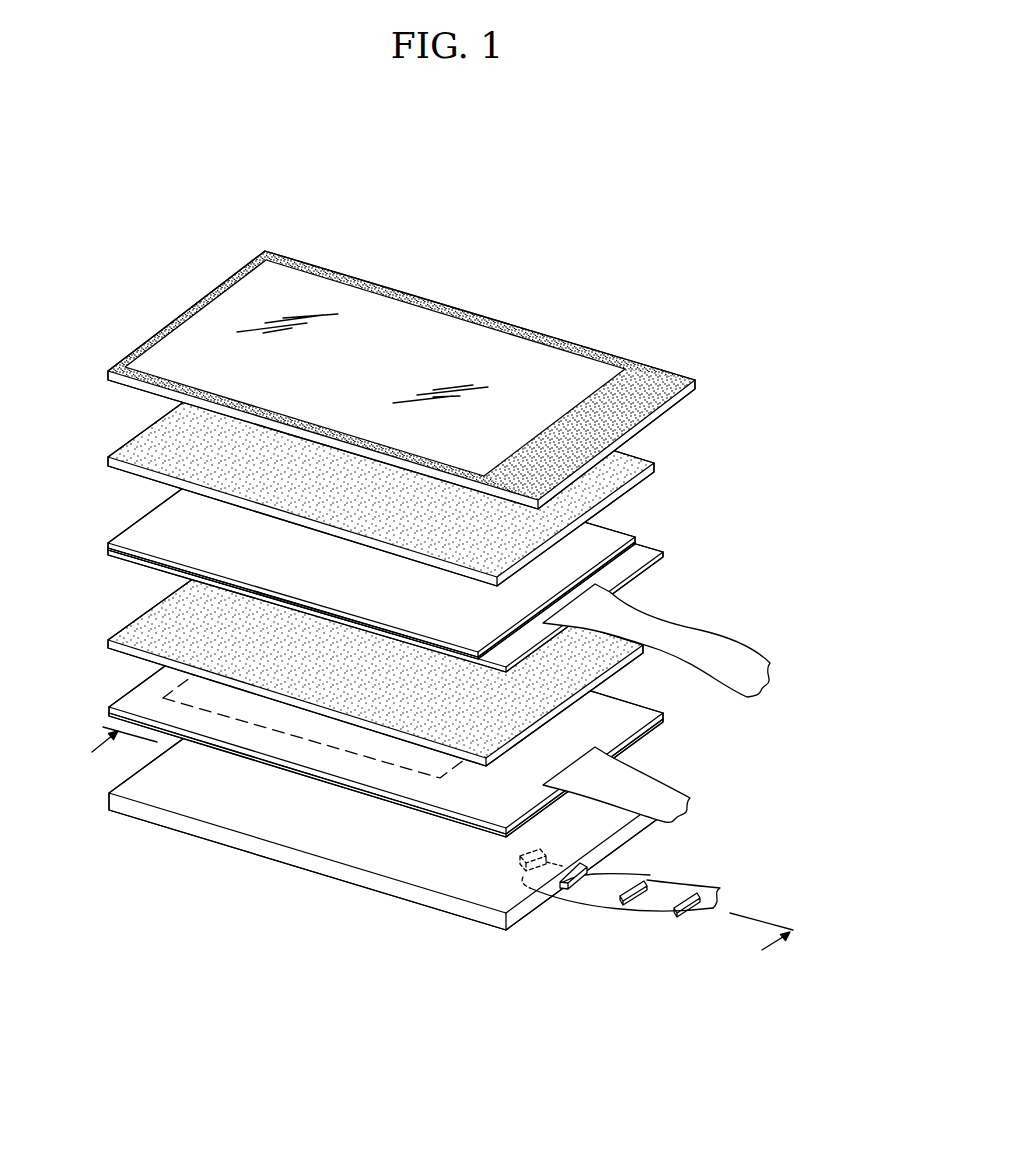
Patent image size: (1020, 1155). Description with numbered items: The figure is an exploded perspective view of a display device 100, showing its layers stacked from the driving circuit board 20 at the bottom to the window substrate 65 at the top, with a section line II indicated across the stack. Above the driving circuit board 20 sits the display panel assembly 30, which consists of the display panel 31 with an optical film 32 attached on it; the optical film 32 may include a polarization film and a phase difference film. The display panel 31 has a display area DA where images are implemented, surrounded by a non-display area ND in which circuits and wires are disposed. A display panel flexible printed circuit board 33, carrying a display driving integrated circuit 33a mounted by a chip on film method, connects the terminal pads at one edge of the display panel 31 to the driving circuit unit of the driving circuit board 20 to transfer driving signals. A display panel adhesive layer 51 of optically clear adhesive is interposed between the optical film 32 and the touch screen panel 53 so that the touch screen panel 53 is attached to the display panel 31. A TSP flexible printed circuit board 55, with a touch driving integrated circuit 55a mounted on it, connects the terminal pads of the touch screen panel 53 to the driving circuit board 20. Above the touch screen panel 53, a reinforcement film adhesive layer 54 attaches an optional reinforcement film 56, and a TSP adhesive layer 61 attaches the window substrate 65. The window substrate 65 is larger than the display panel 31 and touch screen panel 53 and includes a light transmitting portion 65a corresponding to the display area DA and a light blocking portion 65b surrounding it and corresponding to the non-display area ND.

The display device 100 is at (514, 270).
The window substrate 65 is at (427, 380).
The light transmitting portion 65a is at (500, 370).
The light blocking portion 65b is at (618, 397).
The TSP adhesive layer 61 is at (627, 470).
The reinforcement film 56 is at (618, 538).
The reinforcement film adhesive layer 54 is at (637, 543).
The touch screen panel 53 is at (632, 563).
The TSP flexible printed circuit board 55 is at (757, 663).
The touch driving integrated circuit 55a is at (679, 912).
The display panel adhesive layer 51 is at (605, 650).
The display panel assembly 30 is at (430, 714).
The optical film 32 is at (610, 707).
The display panel 31 is at (637, 723).
The display panel flexible printed circuit board 33 is at (667, 797).
The display driving integrated circuit 33a is at (624, 901).
The driving circuit board 20 is at (437, 904).
The display area DA is at (193, 688).
The non-display area ND is at (277, 745).
The section line II is at (430, 847).